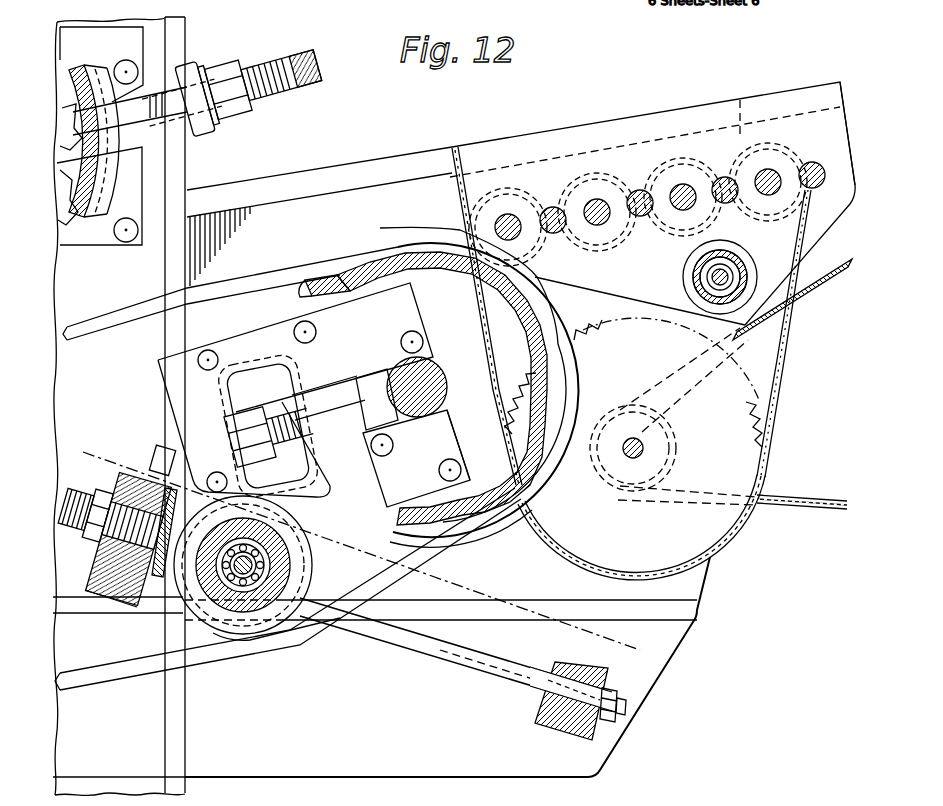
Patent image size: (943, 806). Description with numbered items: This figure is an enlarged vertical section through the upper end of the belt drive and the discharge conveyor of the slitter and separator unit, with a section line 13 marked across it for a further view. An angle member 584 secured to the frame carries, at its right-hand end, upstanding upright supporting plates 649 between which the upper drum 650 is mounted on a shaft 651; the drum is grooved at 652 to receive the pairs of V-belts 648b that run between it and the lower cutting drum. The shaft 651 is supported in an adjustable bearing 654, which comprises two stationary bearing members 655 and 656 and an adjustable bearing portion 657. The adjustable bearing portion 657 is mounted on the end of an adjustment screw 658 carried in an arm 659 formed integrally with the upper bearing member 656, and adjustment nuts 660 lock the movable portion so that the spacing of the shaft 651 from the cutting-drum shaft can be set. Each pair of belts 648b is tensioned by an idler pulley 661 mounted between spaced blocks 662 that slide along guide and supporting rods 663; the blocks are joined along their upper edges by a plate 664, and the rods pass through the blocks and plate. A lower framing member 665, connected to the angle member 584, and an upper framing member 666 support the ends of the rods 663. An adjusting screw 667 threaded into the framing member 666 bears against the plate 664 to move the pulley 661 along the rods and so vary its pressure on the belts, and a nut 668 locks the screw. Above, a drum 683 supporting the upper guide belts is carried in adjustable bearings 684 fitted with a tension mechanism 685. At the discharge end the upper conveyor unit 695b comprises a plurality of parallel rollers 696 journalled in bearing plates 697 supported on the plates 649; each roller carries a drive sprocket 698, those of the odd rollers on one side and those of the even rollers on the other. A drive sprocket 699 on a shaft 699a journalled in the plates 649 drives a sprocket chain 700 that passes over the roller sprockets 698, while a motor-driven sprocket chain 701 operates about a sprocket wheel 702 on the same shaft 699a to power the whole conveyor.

The section line 13- 13 is at (95, 440).
The angle member 584 is at (597, 760).
The V-belts 648b is at (486, 532).
The upright supporting plates 649 is at (320, 231).
The drum 650 is at (315, 297).
The shaft 651 is at (440, 378).
The grooves 652 is at (390, 250).
The adjustable bearing 654 is at (462, 432).
The bearing member 655 is at (449, 420).
The bearing member 656 is at (416, 312).
The adjustable bearing portion 657 is at (372, 385).
The adjustment screw 658 is at (333, 400).
The arm 659 is at (190, 393).
The adjustment nuts 660 is at (262, 412).
The idler pulley 661 is at (216, 640).
The spaced blocks 662 is at (305, 531).
The guide and supporting rods 663 is at (441, 652).
The plate 664 is at (152, 612).
The framing member 665 is at (558, 664).
The framing member 666 is at (124, 606).
The adjusting screw 667 is at (82, 497).
The nut 668 is at (112, 556).
The drum 683 is at (82, 233).
The adjustable bearings 684 is at (140, 36).
The tension mechanism 685 is at (280, 38).
The upper conveyor unit 695b is at (660, 103).
The rollers 696 is at (637, 193).
The bearing plates 697 is at (790, 98).
The drive sprocket 698 is at (661, 277).
The drive sprocket 699 is at (750, 413).
The shaft 699a is at (632, 441).
The sprocket chain 700 is at (784, 366).
The sprocket chain 701 is at (830, 281).
The sprocket wheel 702 is at (672, 428).